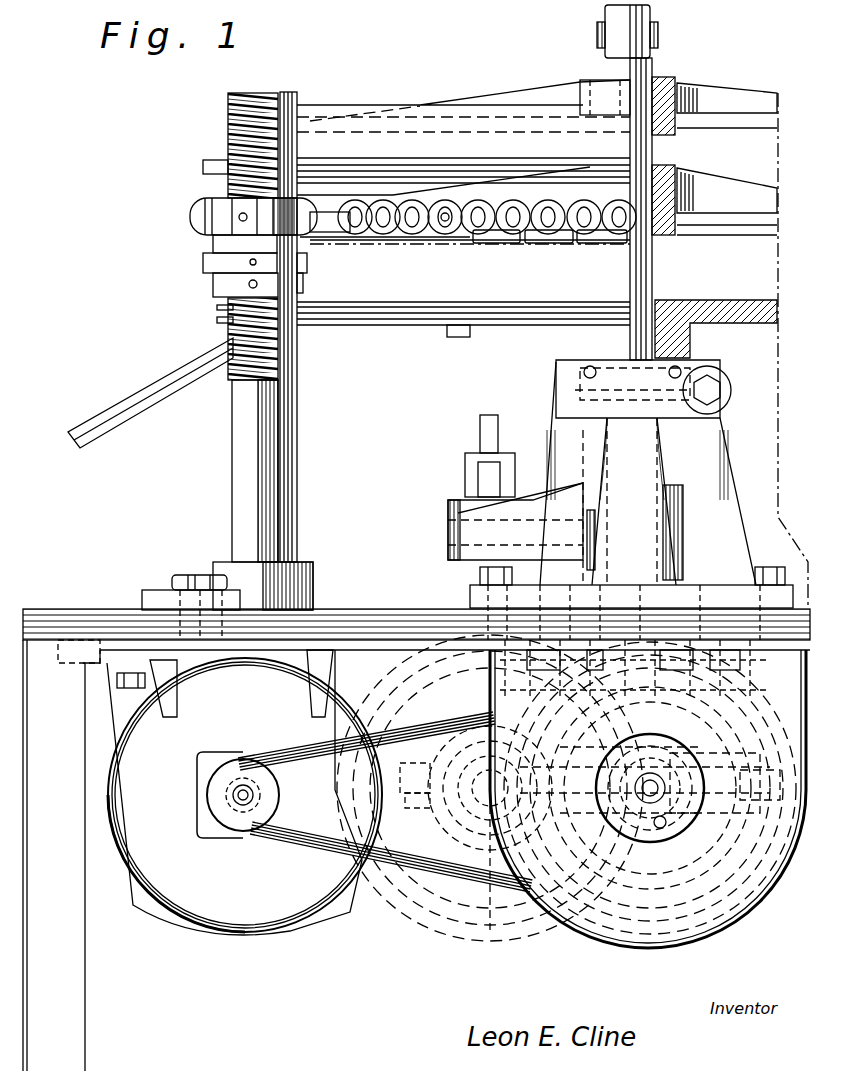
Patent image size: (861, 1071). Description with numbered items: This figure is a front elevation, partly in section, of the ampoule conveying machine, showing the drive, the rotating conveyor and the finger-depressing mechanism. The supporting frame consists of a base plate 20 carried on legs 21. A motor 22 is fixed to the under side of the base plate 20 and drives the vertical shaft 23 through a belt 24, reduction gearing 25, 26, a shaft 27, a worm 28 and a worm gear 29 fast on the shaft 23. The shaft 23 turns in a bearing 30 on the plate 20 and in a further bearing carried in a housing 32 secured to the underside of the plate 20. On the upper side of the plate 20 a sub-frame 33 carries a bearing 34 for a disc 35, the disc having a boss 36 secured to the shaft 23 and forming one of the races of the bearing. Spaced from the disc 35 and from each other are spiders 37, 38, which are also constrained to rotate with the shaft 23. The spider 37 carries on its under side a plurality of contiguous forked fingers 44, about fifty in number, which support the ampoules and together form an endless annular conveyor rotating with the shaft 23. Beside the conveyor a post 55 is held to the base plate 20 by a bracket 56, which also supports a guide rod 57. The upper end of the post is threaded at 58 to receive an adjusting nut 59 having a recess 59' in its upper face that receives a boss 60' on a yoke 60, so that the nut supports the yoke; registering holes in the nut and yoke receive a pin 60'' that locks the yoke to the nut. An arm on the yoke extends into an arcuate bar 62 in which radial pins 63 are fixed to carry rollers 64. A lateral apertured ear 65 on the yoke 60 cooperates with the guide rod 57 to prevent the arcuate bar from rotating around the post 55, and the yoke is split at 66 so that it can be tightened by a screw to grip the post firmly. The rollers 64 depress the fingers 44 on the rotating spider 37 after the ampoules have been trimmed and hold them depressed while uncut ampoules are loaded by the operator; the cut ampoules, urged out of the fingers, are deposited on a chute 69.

The base plate 20 is at (105, 612).
The legs 21 is at (90, 1048).
The motor 22 is at (287, 925).
The vertical shaft 23 is at (653, 277).
The belt 24 is at (313, 845).
The reduction gearing 25 is at (675, 830).
The reduction gearing 26 is at (428, 940).
The shaft 27 is at (656, 782).
The worm 28 is at (445, 808).
The worm gear 29 is at (770, 815).
The bearing 30 is at (592, 822).
The housing 32 is at (720, 930).
The sub-frame 33 is at (556, 410).
The bearing 34 is at (580, 368).
The disc 35 is at (748, 325).
The boss 36 is at (687, 343).
The spider 37 is at (742, 236).
The spider 38 is at (725, 128).
The forked fingers 44 is at (537, 245).
The post 55 is at (235, 502).
The bracket 56 is at (227, 563).
The guide rod 57 is at (297, 502).
The threaded upper end 58 is at (233, 375).
The adjusting nut 59 is at (214, 292).
The recess 59' is at (207, 260).
The yoke 60 is at (196, 180).
The boss 60' is at (202, 240).
The pin 60'' is at (225, 273).
The arcuate bar 62 is at (407, 238).
The radial pins 63 is at (445, 234).
The rollers 64 is at (447, 200).
The lateral apertured ear 65 is at (328, 233).
The split 66 is at (205, 211).
The chute 69 is at (162, 382).